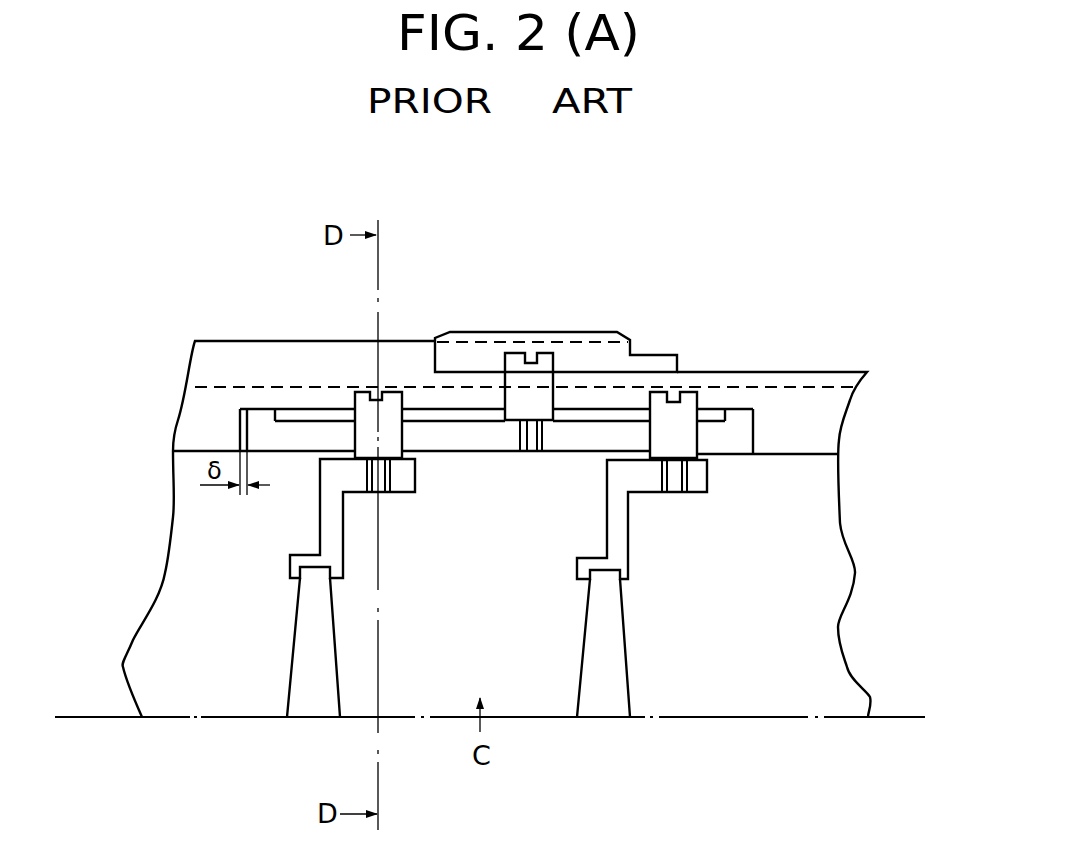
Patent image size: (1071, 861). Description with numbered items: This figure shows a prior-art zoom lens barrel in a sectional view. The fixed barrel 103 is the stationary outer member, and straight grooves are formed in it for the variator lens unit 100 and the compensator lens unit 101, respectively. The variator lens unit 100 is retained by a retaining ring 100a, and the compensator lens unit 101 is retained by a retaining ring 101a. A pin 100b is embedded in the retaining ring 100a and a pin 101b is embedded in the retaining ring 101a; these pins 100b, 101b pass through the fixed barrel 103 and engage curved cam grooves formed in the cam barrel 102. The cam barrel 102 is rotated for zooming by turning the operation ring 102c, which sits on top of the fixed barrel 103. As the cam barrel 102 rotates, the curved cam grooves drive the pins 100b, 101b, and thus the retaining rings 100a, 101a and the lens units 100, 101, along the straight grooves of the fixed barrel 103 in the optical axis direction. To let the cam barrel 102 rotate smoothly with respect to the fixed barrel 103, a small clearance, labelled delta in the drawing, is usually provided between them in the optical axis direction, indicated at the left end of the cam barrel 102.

The variator lens unit 100 is at (312, 702).
The retaining ring 100a is at (335, 537).
The pin 100b is at (393, 433).
The compensator lens unit 101 is at (607, 703).
The retaining ring 101a is at (622, 545).
The pin 101b is at (660, 427).
The cam barrel 102 is at (728, 445).
The operation ring 102c is at (589, 345).
The fixed barrel 103 is at (783, 402).